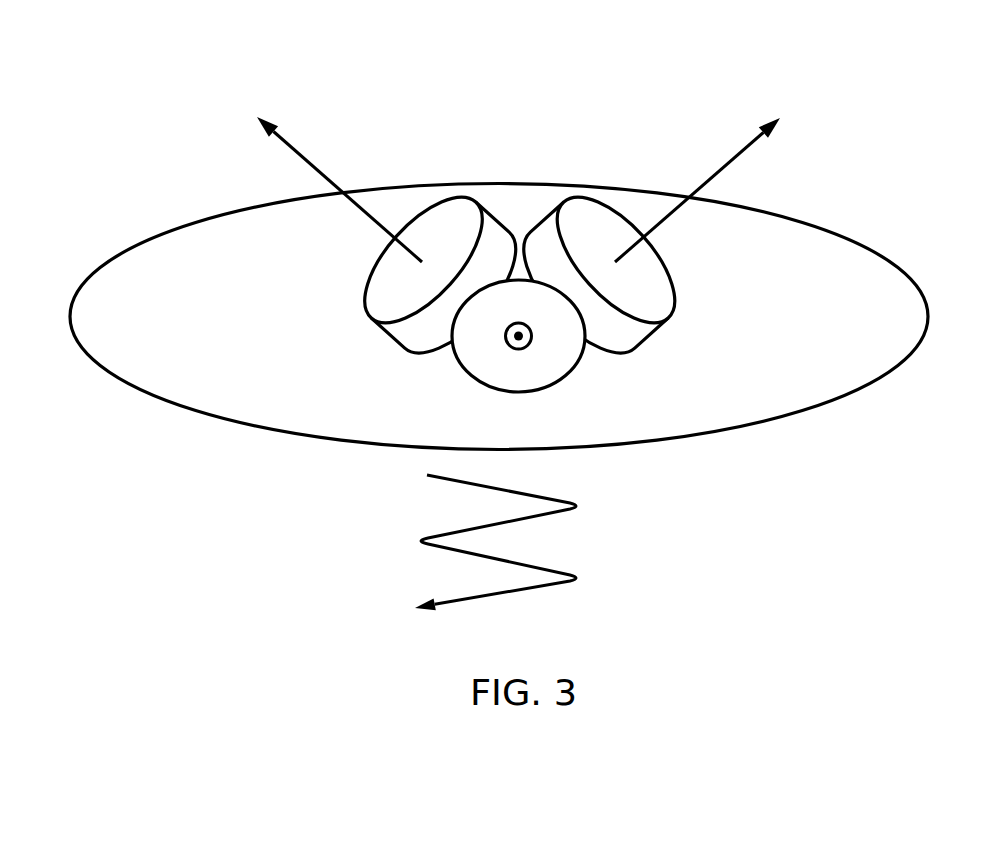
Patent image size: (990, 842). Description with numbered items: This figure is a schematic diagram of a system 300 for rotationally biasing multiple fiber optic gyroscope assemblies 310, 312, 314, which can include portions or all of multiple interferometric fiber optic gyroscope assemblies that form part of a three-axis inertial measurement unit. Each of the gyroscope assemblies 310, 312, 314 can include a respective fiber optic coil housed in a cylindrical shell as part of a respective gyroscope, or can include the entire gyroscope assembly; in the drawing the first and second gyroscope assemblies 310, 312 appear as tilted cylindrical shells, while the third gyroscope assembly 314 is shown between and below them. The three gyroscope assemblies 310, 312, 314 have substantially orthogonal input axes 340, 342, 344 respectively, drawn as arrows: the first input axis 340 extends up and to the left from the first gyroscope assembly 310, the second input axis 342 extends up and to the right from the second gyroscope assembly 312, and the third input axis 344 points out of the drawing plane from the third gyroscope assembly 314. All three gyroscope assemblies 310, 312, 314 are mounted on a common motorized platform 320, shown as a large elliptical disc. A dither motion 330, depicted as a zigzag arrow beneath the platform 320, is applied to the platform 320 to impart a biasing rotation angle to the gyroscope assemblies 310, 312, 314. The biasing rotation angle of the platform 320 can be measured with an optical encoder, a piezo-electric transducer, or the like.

The system 300 is at (413, 83).
The fiber optic gyroscope assembly 310 is at (382, 283).
The fiber optic gyroscope assembly 312 is at (650, 278).
The fiber optic gyroscope assembly 314 is at (550, 380).
The motorized platform 320 is at (893, 355).
The dither motion 330 is at (580, 570).
The input axis 340 is at (305, 163).
The input axis 342 is at (738, 157).
The input axis 344 is at (507, 343).